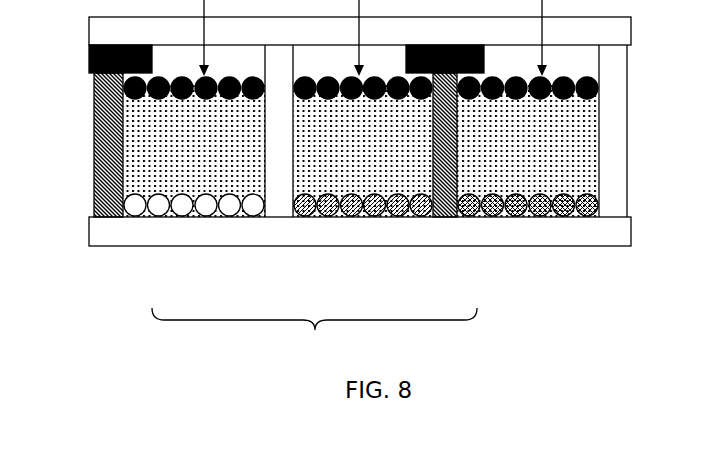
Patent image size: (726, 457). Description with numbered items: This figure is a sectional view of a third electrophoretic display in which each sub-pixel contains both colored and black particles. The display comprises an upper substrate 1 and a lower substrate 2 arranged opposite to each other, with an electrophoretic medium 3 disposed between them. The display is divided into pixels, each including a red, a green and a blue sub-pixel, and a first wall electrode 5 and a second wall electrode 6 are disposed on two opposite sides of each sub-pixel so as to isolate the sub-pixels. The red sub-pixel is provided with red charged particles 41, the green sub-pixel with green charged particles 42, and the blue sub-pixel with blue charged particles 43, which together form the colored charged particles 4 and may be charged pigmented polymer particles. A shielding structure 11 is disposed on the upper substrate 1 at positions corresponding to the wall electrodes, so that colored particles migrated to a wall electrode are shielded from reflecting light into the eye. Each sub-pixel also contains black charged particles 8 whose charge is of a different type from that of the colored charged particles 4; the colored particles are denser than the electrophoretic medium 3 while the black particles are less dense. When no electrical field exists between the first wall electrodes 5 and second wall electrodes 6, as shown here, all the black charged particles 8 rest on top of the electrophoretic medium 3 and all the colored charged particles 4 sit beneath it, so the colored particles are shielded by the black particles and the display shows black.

The upper substrate 1 is at (604, 33).
The lower substrate 2 is at (613, 233).
The electrophoretic medium 3 is at (588, 143).
The colored charged particles 4 is at (314, 332).
The red charged particles 41 is at (136, 205).
The green charged particles 42 is at (305, 205).
The blue charged particles 43 is at (468, 205).
The first wall electrode 5 is at (108, 158).
The second wall electrode 6 is at (613, 90).
The black charged particles 8 is at (118, 93).
The shielding structure 11 is at (88, 63).